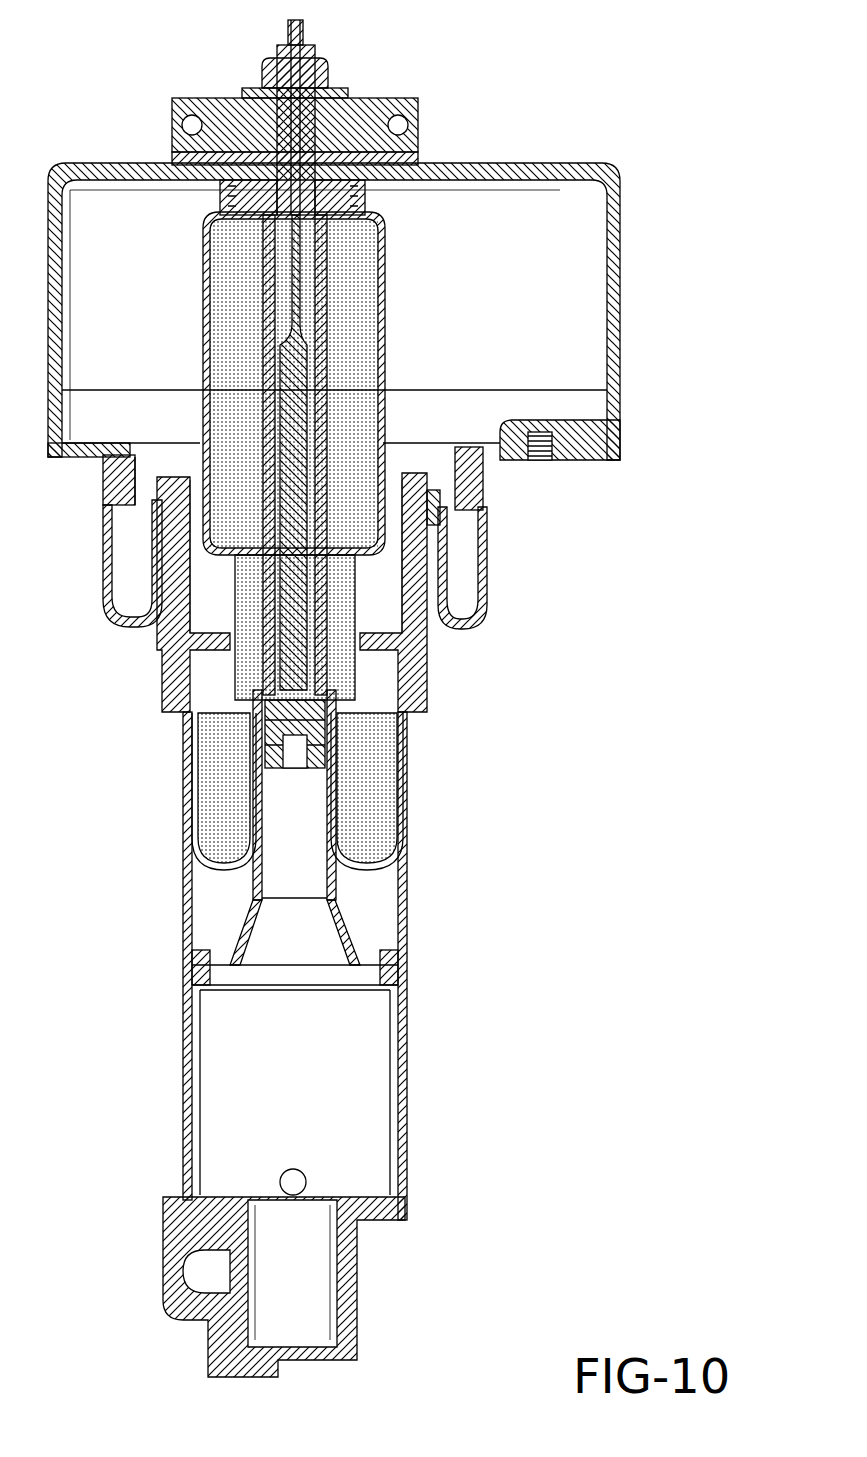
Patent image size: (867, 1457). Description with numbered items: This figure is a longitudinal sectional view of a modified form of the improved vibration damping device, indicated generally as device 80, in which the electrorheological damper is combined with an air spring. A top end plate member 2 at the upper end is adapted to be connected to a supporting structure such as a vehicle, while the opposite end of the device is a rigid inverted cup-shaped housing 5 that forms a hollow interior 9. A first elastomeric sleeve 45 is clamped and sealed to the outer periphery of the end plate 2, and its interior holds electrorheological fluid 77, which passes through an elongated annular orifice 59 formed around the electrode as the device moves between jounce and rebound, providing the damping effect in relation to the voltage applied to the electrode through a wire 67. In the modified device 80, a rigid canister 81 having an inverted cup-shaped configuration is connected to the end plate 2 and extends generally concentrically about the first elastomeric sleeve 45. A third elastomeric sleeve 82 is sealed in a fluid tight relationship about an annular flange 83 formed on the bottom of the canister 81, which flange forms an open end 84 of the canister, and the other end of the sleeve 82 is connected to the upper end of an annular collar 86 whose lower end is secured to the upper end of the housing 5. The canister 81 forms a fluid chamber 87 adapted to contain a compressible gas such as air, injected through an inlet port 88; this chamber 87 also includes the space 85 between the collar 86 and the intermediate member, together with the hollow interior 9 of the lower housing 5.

The top end plate member 2 is at (347, 193).
The inverted cup-shaped housing 5 is at (407, 918).
The hollow interior 9 is at (365, 1100).
The first elastomeric sleeve 45 is at (383, 303).
The elongated annular orifice 59 is at (313, 372).
The wire 67 is at (297, 22).
The electrorheological fluid 77 is at (353, 268).
The modified damping device 80 is at (417, 810).
The canister 81 is at (612, 290).
The third elastomeric sleeve 82 is at (483, 582).
The annular flange 83 is at (468, 497).
The open end 84 is at (447, 502).
The space 85 is at (415, 610).
The annular collar 86 is at (372, 603).
The fluid chamber 87 is at (560, 268).
The inlet port 88 is at (543, 462).